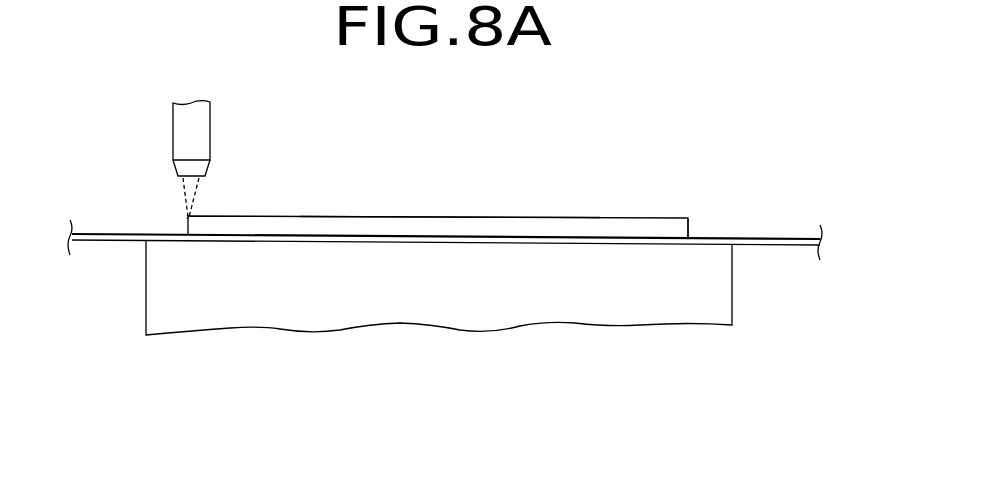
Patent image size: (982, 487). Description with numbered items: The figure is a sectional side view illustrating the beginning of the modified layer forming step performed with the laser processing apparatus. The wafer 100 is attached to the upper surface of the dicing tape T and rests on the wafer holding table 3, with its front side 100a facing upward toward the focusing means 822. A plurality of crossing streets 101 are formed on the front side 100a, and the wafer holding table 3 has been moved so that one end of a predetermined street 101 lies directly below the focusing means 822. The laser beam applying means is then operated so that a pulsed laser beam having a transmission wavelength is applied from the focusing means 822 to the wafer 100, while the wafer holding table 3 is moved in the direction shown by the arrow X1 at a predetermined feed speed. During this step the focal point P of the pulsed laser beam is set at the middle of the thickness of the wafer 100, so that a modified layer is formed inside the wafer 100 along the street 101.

The focusing means 822 is at (210, 122).
The dicing tape T is at (91, 233).
The focal point P is at (187, 220).
The wafer 100 is at (632, 216).
The front side 100a is at (519, 216).
The street 101 is at (692, 227).
The wafer holding table 3 is at (723, 286).
The arrow (feed direction) X1 is at (530, 366).